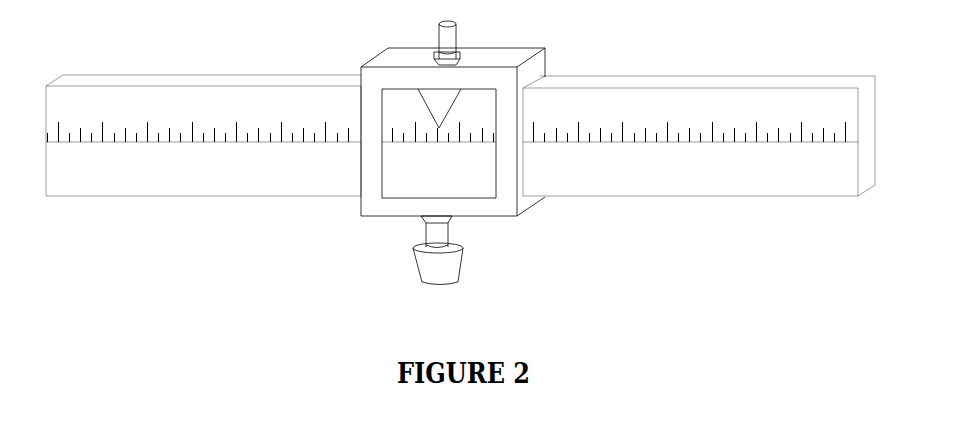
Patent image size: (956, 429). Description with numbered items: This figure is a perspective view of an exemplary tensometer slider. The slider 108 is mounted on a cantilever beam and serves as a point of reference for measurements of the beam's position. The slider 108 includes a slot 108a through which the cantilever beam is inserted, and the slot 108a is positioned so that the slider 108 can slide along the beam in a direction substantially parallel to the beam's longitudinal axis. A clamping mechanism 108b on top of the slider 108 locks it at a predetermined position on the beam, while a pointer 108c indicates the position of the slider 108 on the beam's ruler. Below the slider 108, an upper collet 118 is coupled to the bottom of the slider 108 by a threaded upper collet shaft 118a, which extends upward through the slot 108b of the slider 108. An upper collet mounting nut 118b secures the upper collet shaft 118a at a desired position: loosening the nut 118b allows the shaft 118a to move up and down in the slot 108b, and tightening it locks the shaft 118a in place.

The slider 108 is at (405, 48).
The slot 108a is at (535, 70).
The clamping mechanism 108b is at (458, 56).
The pointer 108c is at (422, 92).
The upper collet 118 is at (422, 278).
The upper collet shaft 118a is at (443, 238).
The upper collet mounting nut 118b is at (424, 225).